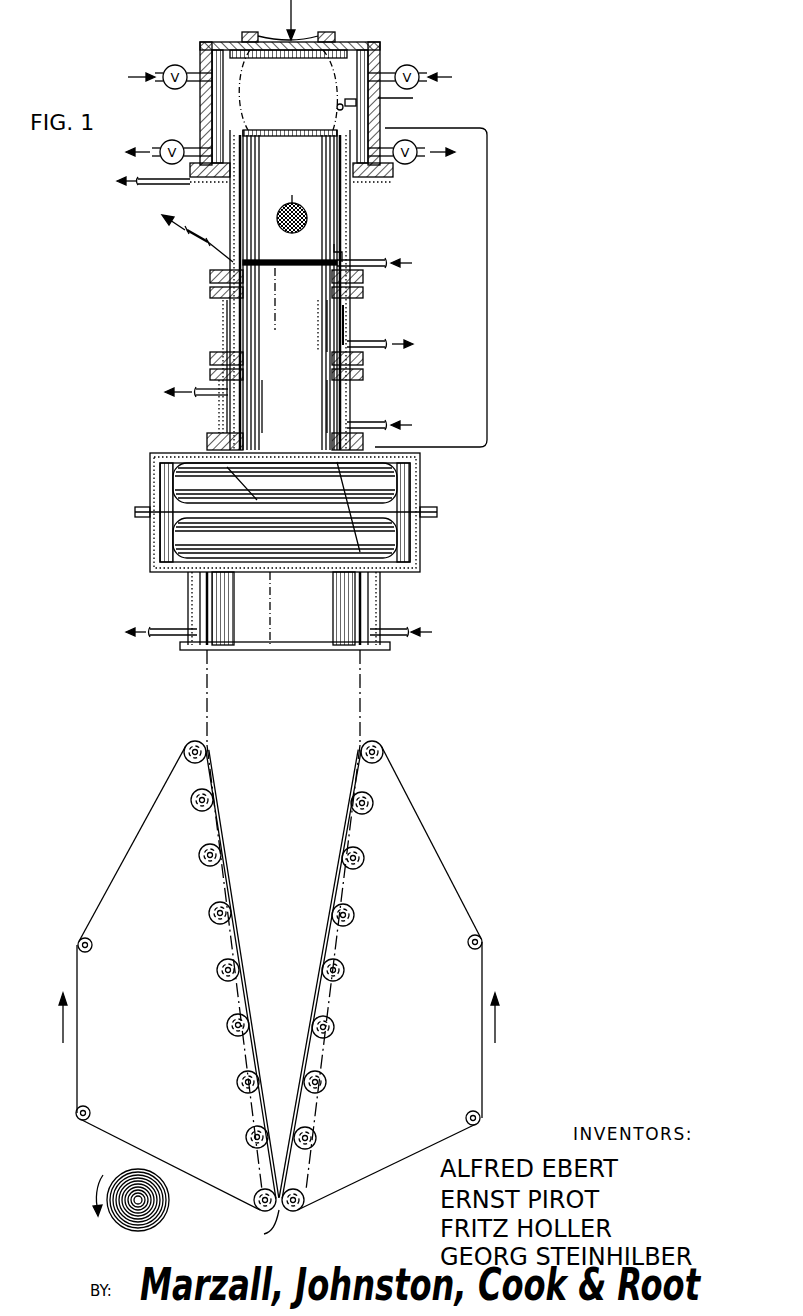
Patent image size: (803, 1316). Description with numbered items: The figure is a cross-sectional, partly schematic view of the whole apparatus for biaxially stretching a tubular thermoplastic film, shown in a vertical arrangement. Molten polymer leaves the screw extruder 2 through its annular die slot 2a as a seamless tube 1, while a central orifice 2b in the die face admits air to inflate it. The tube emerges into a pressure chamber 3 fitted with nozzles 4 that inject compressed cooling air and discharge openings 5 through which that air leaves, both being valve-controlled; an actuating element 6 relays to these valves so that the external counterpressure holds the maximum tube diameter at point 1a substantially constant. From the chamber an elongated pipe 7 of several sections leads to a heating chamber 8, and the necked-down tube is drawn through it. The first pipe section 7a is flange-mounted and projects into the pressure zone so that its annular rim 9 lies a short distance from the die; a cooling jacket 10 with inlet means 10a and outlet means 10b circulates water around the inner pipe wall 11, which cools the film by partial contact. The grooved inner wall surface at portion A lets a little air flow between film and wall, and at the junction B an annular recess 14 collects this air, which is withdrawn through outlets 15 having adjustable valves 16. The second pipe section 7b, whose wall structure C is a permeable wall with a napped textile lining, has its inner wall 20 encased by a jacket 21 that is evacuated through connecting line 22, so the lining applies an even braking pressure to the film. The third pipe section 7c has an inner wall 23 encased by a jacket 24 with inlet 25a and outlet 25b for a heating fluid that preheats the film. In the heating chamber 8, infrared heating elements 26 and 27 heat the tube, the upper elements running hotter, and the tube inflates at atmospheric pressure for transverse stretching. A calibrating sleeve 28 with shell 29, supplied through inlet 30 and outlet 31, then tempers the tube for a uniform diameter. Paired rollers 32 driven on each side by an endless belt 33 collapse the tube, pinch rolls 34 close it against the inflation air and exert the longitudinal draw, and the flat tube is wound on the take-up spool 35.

The seamless tube 1 is at (245, 78).
The point of maximum tube diameter 1a is at (337, 107).
The screw extruder 2 is at (245, 38).
The annular die slot 2a is at (334, 36).
The central orifice 2b is at (298, 36).
The pressure chamber 3 is at (372, 64).
The nozzles 4 is at (173, 89).
The discharge openings 5 is at (190, 148).
The actuating element 6 is at (382, 118).
The elongated pipe 7 is at (489, 287).
The first pipe section 7a is at (320, 190).
The second pipe section 7b is at (307, 310).
The third pipe section 7c is at (310, 395).
The heating chamber 8 is at (420, 494).
The annular rim 9 is at (278, 136).
The cooling jacket 10 is at (230, 208).
The inlet means 10a is at (393, 263).
The outlet means 10b is at (152, 186).
The inner pipe wall 11 is at (292, 205).
The portion of grooved inner wall surface A is at (308, 218).
The junction between first and second pipe sections B is at (345, 250).
The wall structure of second pipe section C is at (353, 324).
The annular recess 14 is at (285, 299).
The outlets 15 is at (222, 258).
The adjustable valves 16 is at (197, 240).
The inner wall 20 is at (322, 323).
The jacket 21 is at (226, 322).
The connecting line 22 is at (380, 340).
The inner wall 23 is at (257, 407).
The jacket 24 is at (228, 410).
The inlet 25a is at (360, 422).
The outlet 25b is at (205, 397).
The heating elements 26 is at (385, 478).
The heating elements 27 is at (385, 538).
The calibrating sleeve 28 is at (345, 596).
The shell 29 is at (368, 600).
The inlet 30 is at (395, 640).
The outlet 31 is at (172, 640).
The paired rollers 32 is at (362, 857).
The endless belt 33 is at (446, 866).
The pinch rolls 34 is at (258, 1227).
The take-up spool 35 is at (120, 1178).